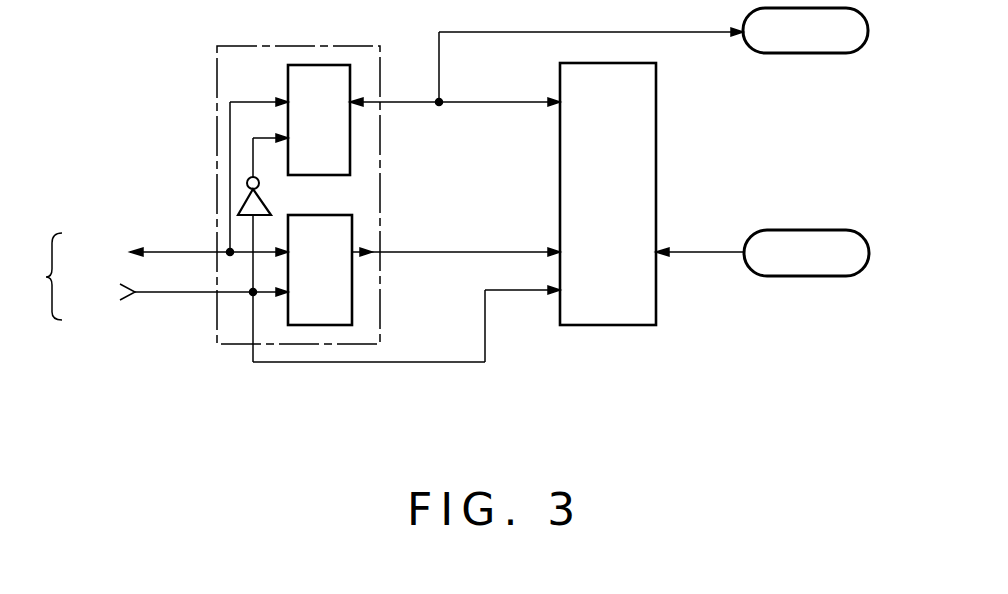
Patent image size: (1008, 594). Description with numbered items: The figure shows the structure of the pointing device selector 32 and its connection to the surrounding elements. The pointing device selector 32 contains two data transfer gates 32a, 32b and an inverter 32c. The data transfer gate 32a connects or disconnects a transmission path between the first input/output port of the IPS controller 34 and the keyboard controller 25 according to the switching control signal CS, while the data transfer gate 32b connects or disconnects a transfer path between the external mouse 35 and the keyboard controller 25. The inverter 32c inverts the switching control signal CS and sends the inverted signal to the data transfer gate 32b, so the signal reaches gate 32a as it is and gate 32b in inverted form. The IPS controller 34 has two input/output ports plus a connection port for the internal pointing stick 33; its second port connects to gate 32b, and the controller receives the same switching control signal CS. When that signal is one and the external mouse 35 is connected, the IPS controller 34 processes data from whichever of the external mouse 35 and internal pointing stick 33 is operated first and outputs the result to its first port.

The keyboard controller 25 is at (90, 260).
The pointing device selector 32 is at (297, 46).
The data transfer gate 32a is at (354, 316).
The data transfer gate 32b is at (352, 166).
The inverter 32c is at (268, 200).
The internal pointing stick 33 is at (806, 278).
The IPS controller 34 is at (606, 327).
The external mouse 35 is at (806, 55).